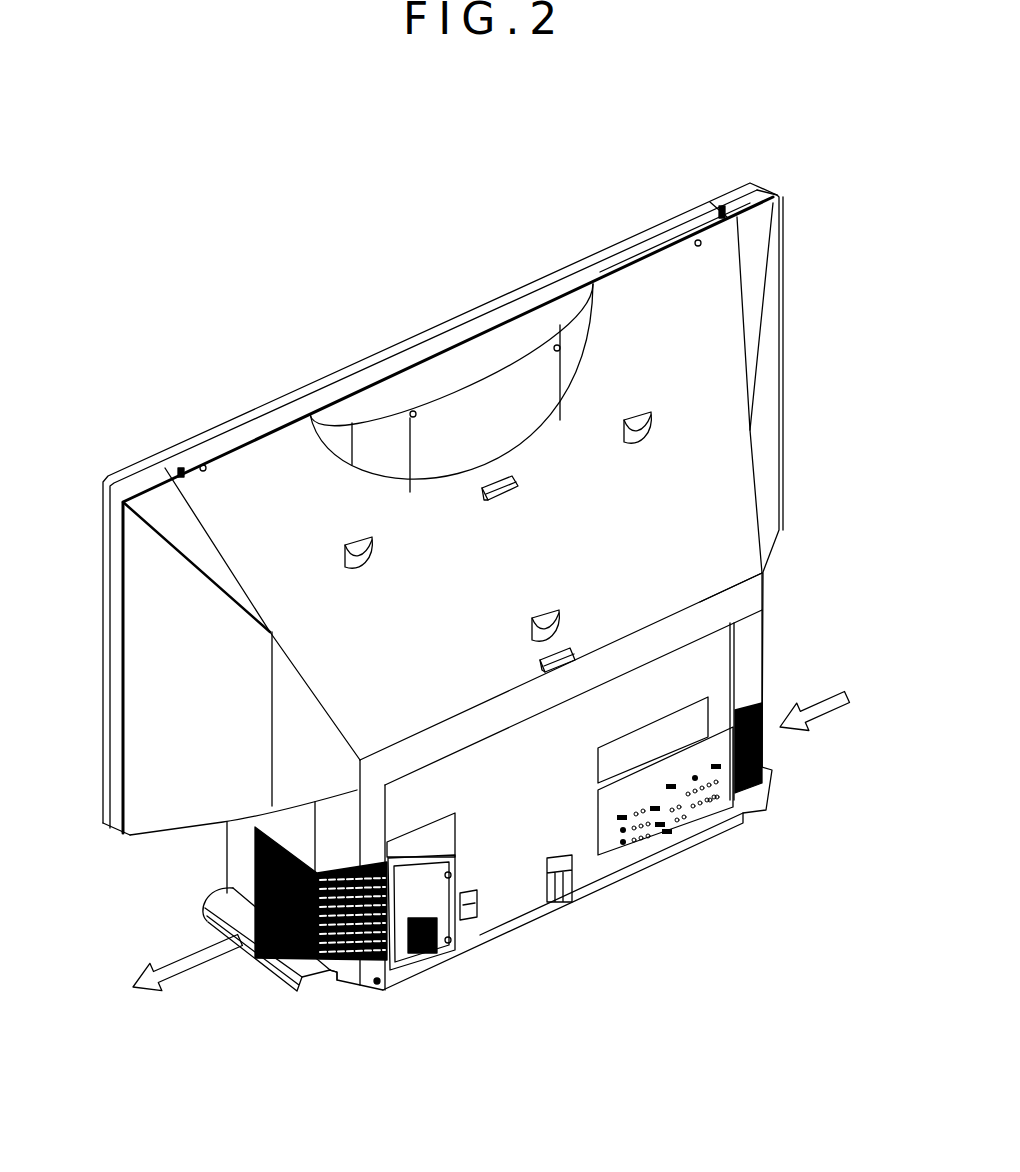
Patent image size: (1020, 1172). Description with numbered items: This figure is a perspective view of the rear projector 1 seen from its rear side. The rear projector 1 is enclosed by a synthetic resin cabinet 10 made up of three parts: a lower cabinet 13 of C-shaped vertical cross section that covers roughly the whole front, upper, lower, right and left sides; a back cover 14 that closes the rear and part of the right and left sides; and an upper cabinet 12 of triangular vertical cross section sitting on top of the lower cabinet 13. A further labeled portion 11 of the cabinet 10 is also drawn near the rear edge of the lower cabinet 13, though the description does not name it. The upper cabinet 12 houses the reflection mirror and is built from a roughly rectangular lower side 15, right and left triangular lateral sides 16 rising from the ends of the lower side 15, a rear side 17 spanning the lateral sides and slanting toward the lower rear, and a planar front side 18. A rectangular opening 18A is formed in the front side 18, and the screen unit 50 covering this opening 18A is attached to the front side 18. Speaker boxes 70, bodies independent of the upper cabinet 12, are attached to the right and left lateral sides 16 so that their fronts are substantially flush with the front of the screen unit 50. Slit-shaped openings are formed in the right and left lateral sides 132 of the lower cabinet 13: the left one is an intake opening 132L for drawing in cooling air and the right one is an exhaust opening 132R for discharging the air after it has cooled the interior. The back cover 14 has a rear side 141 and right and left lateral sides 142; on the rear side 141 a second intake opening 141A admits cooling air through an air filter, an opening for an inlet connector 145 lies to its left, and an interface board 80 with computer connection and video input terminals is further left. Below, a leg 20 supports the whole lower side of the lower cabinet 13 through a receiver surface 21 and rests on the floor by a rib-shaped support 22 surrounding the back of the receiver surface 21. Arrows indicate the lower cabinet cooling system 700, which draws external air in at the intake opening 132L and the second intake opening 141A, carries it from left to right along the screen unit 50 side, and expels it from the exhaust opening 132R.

The rear projector 1 is at (214, 203).
The cabinet 10 is at (713, 513).
The lower cabinet portion 11 is at (753, 625).
The upper cabinet 12 is at (737, 545).
The lower cabinet 13 is at (747, 653).
The back cover 14 is at (693, 675).
The lower side 15 is at (223, 823).
The lateral sides 16 is at (737, 290).
The rear side 17 is at (713, 472).
The front side 18 is at (657, 248).
The rectangular opening 18A is at (760, 193).
The leg 20 is at (265, 950).
The receiver surface 21 is at (337, 973).
The rib-shaped support 22 is at (285, 967).
The screen unit 50 is at (270, 413).
The speaker box 70 is at (768, 350).
The interface board 80 is at (613, 850).
The lateral sides 132 is at (242, 887).
The intake opening 132L is at (765, 760).
The exhaust opening 132R is at (297, 945).
The rear side 141 is at (470, 920).
The second intake opening 141A is at (440, 885).
The lateral sides 142 is at (383, 990).
The inlet connector 145 is at (460, 903).
The lower cabinet cooling system 700 is at (813, 707).